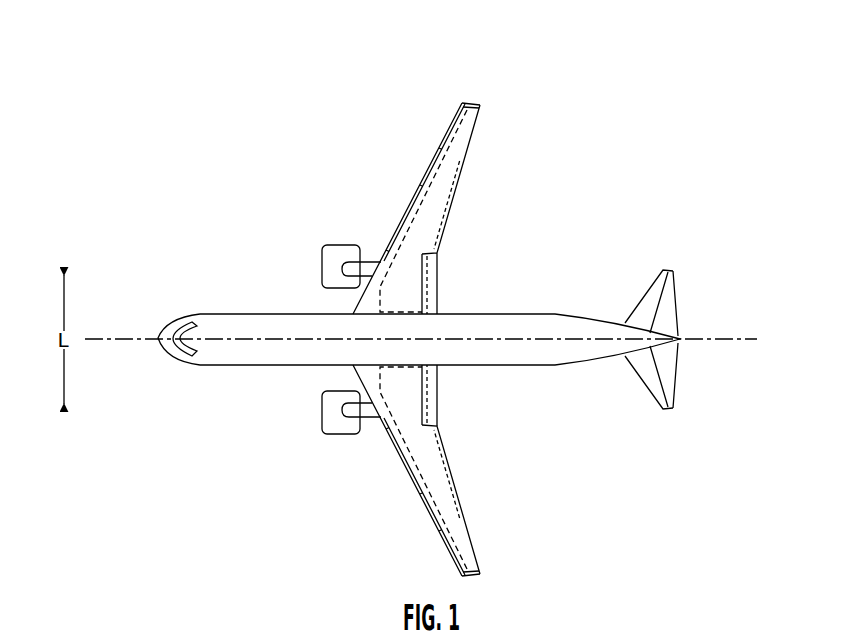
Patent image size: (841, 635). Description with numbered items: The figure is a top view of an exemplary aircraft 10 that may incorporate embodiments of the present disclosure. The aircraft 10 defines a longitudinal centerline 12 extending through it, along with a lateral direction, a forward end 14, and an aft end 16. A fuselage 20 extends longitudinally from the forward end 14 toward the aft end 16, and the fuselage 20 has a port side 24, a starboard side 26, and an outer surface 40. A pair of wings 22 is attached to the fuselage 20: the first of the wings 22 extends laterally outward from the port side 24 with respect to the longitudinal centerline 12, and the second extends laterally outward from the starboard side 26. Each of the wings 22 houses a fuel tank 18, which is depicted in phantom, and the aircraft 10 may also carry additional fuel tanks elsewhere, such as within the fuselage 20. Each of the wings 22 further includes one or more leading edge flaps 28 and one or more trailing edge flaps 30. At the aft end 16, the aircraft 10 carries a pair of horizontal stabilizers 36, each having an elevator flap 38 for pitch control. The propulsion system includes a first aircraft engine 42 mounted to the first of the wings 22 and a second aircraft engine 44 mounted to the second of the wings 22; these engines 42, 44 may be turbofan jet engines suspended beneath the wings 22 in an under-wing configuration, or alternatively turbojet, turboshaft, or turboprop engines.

The aircraft 10 is at (567, 178).
The longitudinal centerline 12 is at (137, 338).
The forward end 14 is at (158, 356).
The aft end 16 is at (421, 341).
The fuel tank 18 is at (425, 185).
The fuselage 20 is at (201, 355).
The wings 22 is at (466, 121).
The port side 24 is at (264, 373).
The starboard side 26 is at (262, 311).
The leading edge flaps 28 is at (410, 477).
The trailing edge flaps 30 is at (452, 478).
The horizontal stabilizers 36 is at (657, 287).
The elevator flap 38 is at (673, 287).
The outer surface 40 is at (532, 351).
The first aircraft engine 42 is at (337, 434).
The second aircraft engine 44 is at (333, 249).